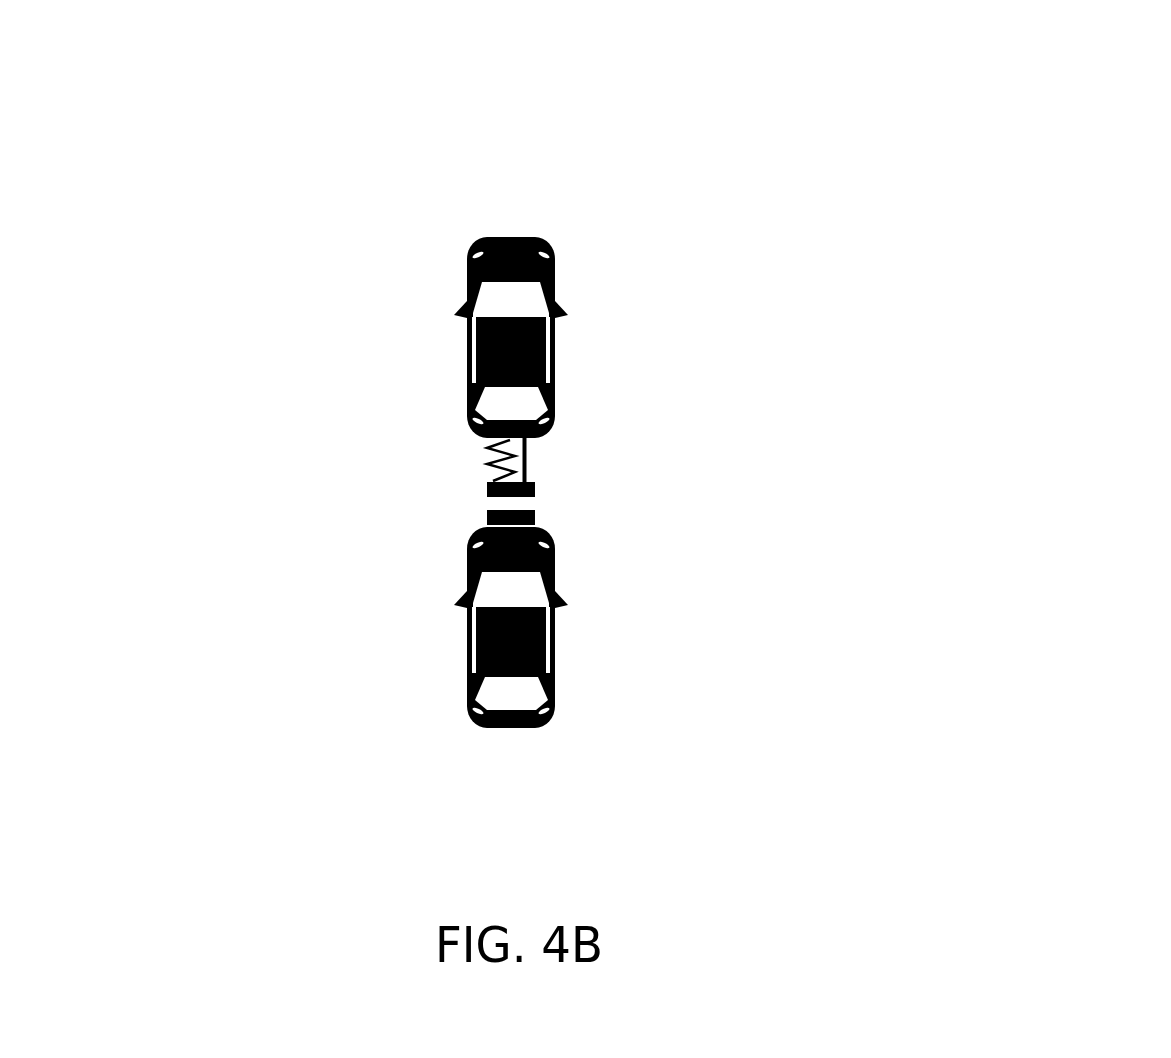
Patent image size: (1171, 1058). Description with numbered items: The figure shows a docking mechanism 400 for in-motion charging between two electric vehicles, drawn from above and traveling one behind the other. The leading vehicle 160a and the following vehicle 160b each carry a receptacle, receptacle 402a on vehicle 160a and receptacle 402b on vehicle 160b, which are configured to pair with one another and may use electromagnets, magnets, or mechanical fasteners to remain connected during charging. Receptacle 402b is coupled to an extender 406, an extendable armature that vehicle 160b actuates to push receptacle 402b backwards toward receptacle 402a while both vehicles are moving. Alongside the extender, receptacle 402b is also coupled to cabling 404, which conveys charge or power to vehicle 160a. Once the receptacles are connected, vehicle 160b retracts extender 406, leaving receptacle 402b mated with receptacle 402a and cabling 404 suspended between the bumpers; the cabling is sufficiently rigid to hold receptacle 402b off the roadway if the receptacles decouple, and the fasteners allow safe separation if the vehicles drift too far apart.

The vehicle platooning arrangement 400 is at (1065, 92).
The vehicle 160b is at (513, 237).
The vehicle 160a is at (513, 727).
The cabling 404 is at (493, 457).
The extender 406 is at (527, 465).
The receptacle 402b is at (487, 489).
The receptacle 402a is at (533, 508).